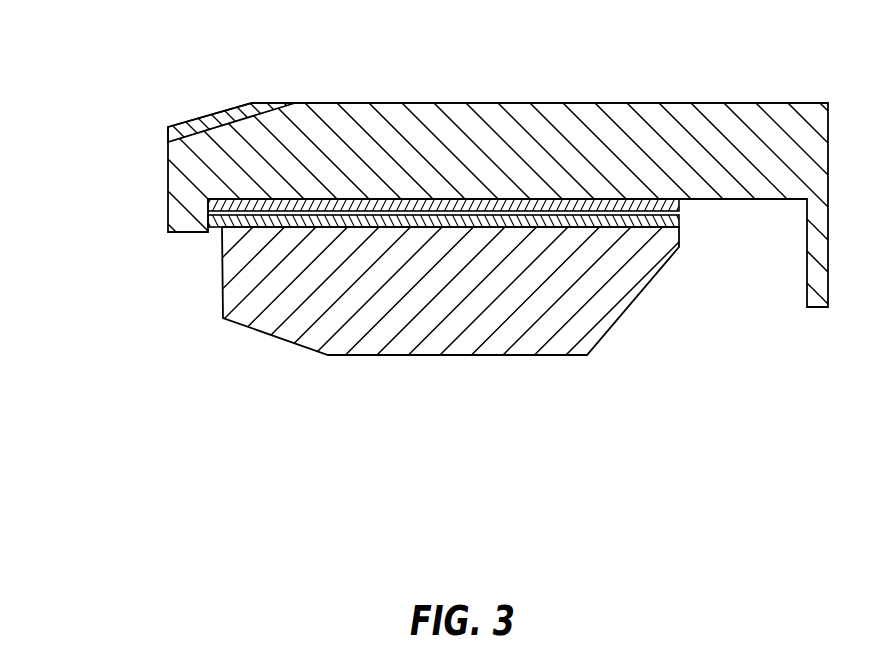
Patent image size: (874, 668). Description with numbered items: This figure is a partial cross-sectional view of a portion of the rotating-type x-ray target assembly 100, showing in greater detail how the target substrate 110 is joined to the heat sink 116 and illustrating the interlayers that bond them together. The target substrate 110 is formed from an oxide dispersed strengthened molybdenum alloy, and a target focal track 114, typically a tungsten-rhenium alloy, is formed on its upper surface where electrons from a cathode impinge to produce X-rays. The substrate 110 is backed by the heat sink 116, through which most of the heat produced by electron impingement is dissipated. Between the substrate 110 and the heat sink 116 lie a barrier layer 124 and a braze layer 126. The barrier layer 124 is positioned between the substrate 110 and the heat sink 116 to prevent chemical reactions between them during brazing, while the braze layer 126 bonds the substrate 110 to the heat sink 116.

The x-ray target assembly 100 is at (108, 205).
The target substrate 110 is at (600, 103).
The target focal track 114 is at (201, 114).
The heat sink 116 is at (445, 313).
The barrier layer 124 is at (213, 206).
The braze layer 126 is at (679, 218).